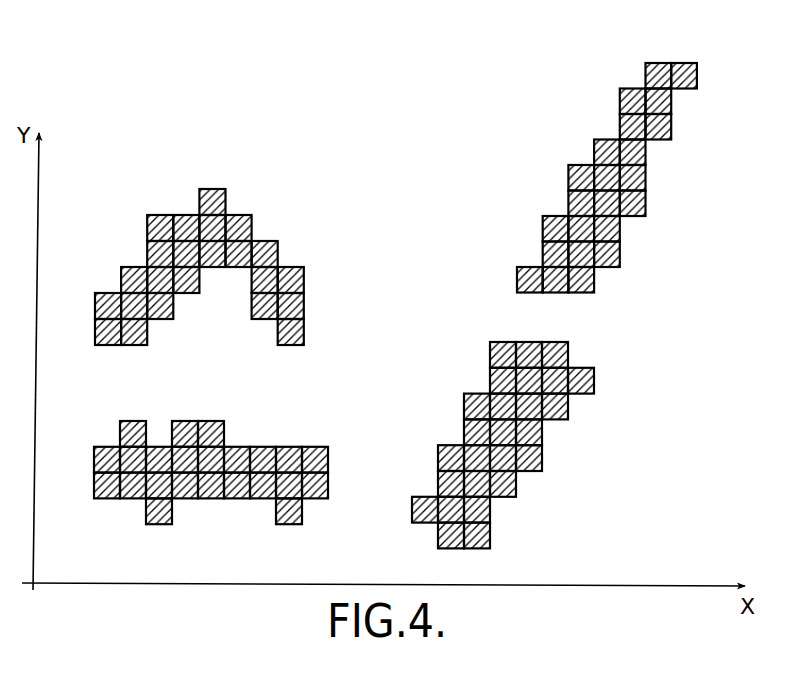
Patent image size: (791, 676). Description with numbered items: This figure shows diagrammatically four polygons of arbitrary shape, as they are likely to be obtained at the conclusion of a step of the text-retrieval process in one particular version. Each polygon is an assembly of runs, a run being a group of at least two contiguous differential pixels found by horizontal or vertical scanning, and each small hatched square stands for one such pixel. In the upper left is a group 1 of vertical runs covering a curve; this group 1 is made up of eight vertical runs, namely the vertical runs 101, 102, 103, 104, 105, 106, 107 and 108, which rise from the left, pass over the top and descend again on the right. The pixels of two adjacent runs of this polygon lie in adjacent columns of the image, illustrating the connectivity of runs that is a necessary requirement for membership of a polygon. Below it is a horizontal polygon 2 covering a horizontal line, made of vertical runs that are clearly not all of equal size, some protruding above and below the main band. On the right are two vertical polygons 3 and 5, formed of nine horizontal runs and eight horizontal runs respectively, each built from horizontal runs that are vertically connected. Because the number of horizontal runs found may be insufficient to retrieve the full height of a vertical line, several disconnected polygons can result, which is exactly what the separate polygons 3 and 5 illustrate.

The group of vertical runs 1 is at (212, 208).
The vertical run 101 is at (110, 292).
The vertical run 102 is at (137, 266).
The vertical run 103 is at (167, 215).
The vertical run 104 is at (188, 214).
The vertical run 105 is at (213, 189).
The vertical run 106 is at (237, 215).
The vertical run 107 is at (268, 241).
The vertical run 108 is at (297, 267).
The horizontal polygon 2 is at (245, 432).
The vertical polygon 3 is at (558, 193).
The vertical polygon 5 is at (477, 382).